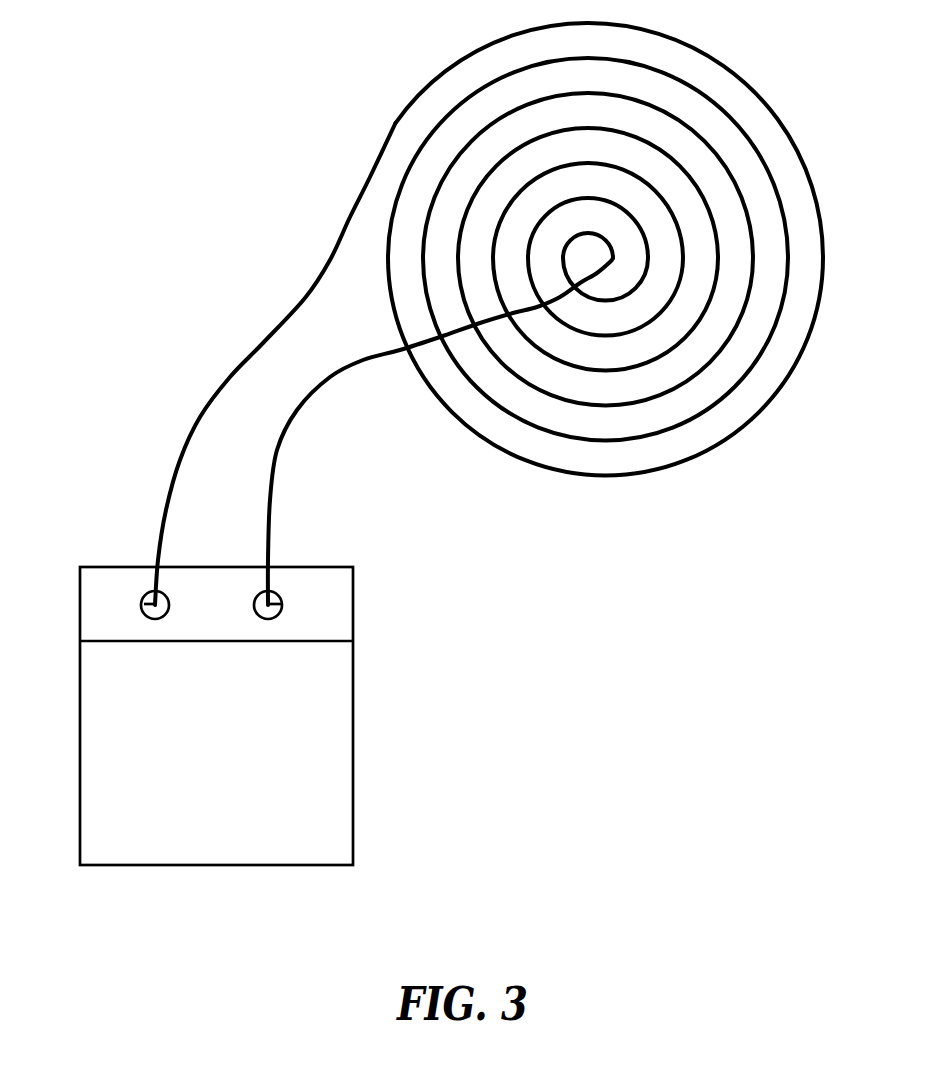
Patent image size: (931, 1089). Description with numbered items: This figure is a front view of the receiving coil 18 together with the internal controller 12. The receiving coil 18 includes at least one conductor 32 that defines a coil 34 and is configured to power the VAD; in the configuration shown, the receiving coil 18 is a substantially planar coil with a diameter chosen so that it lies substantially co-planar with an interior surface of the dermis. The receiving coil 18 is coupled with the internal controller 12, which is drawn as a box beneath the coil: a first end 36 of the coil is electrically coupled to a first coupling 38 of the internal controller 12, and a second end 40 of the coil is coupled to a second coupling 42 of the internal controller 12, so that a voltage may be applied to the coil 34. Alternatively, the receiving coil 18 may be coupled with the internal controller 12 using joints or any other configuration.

The internal controller 12 is at (229, 770).
The receiving coil 18 is at (489, 314).
The conductor 32 is at (772, 397).
The coil 34 is at (440, 79).
The first end 36 is at (262, 592).
The first coupling 38 is at (281, 604).
The second end 40 is at (150, 592).
The second coupling 42 is at (144, 604).